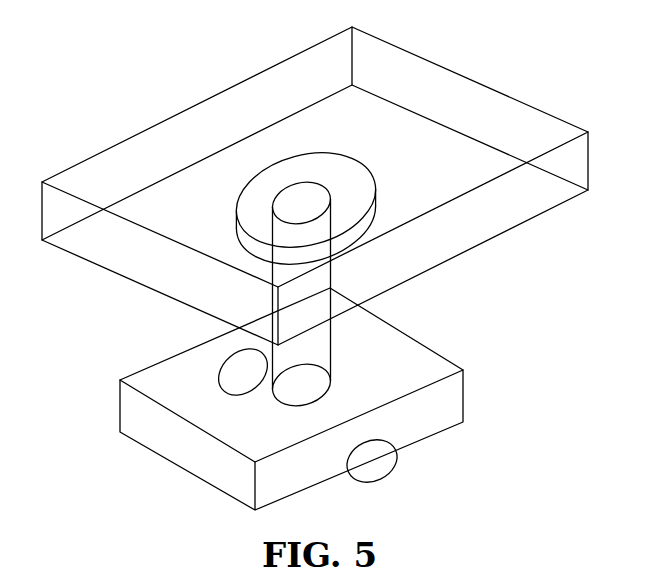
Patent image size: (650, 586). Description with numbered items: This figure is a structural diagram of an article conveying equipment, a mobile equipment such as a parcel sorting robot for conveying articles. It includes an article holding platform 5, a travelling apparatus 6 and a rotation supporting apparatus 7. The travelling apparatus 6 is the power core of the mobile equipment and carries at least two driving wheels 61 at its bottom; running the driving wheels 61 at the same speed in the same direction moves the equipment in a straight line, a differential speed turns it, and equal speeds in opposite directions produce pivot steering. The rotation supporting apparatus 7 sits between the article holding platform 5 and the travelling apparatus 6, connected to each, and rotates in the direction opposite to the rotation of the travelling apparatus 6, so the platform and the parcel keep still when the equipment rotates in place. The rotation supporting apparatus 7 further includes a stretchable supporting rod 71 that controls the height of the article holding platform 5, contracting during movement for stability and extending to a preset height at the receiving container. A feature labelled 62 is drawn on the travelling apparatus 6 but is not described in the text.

The article holding platform 5 is at (485, 128).
The rotation supporting apparatus 7 is at (262, 200).
The stretchable supporting rod 71 is at (305, 348).
The travelling apparatus 6 is at (430, 370).
The driving wheel 61 is at (390, 445).
The top hole 62 is at (218, 372).